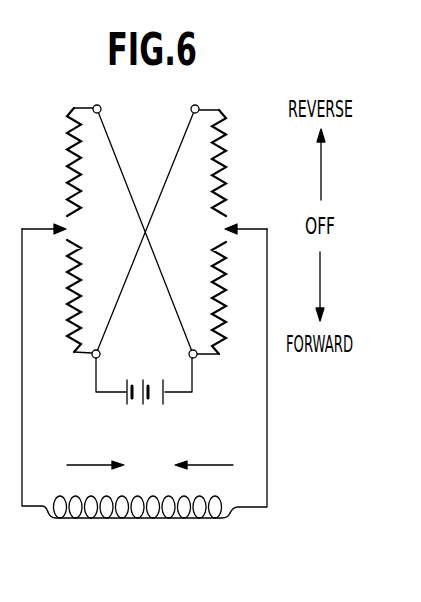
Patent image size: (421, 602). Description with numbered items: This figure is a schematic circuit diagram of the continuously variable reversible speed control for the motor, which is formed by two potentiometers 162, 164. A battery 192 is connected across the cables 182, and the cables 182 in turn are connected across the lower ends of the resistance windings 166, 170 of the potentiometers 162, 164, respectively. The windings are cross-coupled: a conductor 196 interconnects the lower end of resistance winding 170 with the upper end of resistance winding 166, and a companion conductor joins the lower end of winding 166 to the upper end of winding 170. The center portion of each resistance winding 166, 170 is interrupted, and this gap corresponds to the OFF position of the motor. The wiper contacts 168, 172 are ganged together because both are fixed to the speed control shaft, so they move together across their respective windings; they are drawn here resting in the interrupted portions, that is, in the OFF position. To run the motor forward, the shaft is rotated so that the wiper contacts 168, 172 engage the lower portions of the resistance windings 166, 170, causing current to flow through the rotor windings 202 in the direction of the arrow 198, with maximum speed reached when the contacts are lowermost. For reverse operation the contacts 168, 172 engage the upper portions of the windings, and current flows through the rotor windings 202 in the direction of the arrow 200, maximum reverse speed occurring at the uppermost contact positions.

The potentiometer 162 is at (51, 164).
The potentiometer 164 is at (232, 174).
The resistance winding 166 is at (75, 183).
The resistance winding 170 is at (216, 187).
The wiper contact 168 is at (42, 227).
The wiper contact 172 is at (240, 228).
The conductor 196 is at (123, 173).
The cables 182 is at (93, 376).
The battery 192 is at (155, 366).
The arrow 198 is at (93, 464).
The arrow 200 is at (207, 464).
The rotor windings 202 is at (128, 519).